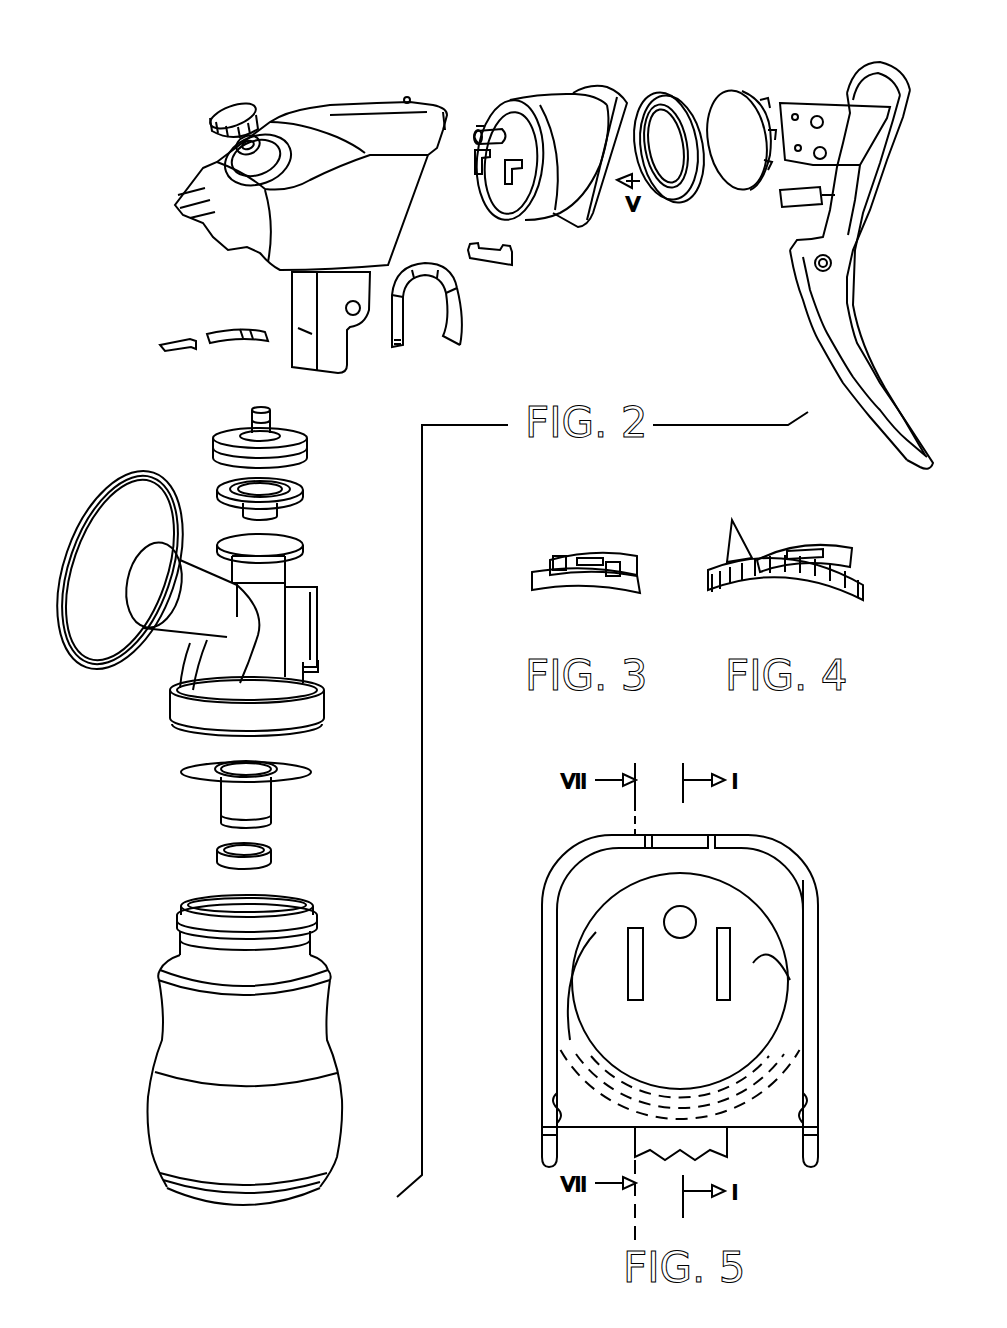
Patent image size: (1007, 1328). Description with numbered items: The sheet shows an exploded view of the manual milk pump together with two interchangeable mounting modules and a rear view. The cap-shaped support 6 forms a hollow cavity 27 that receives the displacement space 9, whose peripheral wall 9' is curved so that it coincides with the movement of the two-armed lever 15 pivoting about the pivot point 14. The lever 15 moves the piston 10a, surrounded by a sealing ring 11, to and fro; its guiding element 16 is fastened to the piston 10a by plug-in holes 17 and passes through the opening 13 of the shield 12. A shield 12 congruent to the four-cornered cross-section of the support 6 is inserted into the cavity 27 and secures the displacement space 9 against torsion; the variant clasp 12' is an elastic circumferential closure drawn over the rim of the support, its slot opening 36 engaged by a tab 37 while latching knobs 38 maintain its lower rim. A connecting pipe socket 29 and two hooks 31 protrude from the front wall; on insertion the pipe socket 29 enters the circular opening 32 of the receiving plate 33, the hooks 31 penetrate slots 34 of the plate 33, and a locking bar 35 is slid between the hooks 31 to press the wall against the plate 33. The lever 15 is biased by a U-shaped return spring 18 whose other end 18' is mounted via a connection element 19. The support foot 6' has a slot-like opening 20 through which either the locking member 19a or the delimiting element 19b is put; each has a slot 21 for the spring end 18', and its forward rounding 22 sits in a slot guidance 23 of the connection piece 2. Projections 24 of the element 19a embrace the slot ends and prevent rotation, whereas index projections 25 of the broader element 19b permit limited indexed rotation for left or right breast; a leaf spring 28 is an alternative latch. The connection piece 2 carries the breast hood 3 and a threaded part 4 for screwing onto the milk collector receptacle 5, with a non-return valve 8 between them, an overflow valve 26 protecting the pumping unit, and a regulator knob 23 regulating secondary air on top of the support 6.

In FIG. 2, the connection piece 2 is at (322, 576).
In FIG. 2, the breast hood 3 is at (137, 500).
In FIG. 2, the threaded part 4 is at (326, 711).
In FIG. 2, the milk collector receptacle 5 is at (327, 1010).
In FIG. 2, the support 6 is at (311, 150).
In FIG. 5, the support 6 is at (680, 967).
In FIG. 2, the support foot 6' is at (307, 322).
In FIG. 5, the support foot 6' is at (708, 1158).
In FIG. 2, the non-return valve 8 is at (273, 851).
In FIG. 2, the displacement space 9 is at (540, 122).
In FIG. 2, the peripheral wall 9' is at (535, 115).
In FIG. 2, the piston 10a is at (710, 110).
In FIG. 2, the sealing ring 11 is at (677, 200).
In FIG. 2, the shield 12 is at (593, 129).
In FIG. 5, the clasp 12' is at (836, 917).
In FIG. 5, the opening 13 is at (593, 930).
In FIG. 2, the pivot point 14 is at (815, 268).
In FIG. 2, the lever 15 is at (870, 220).
In FIG. 2, the guiding element 16 is at (819, 170).
In FIG. 2, the plug-in holes 17 is at (816, 116).
In FIG. 2, the return spring 18 is at (451, 305).
In FIG. 2, the other end of the spring 18' is at (425, 354).
In FIG. 2, the connection element 19 is at (227, 346).
In FIG. 3, the locking member 19a is at (607, 550).
In FIG. 4, the delimiting element 19b is at (785, 540).
In FIG. 2, the slot-like opening 20 is at (306, 335).
In FIG. 3, the slot 21 is at (590, 560).
In FIG. 4, the slot 21 is at (813, 547).
In FIG. 3, the forward rounding 22 is at (583, 585).
In FIG. 4, the forward rounding 22 is at (793, 582).
In FIG. 2, the regulator knob 23 is at (233, 105).
In FIG. 3, the projections 24 is at (558, 558).
In FIG. 4, the index projections 25 is at (732, 521).
In FIG. 2, the overflow valve 26 is at (275, 572).
In FIG. 2, the cavity 27 is at (440, 147).
In FIG. 5, the cavity 27 is at (753, 963).
In FIG. 2, the leaf spring 28 is at (176, 330).
In FIG. 2, the connecting pipe socket 29 is at (480, 124).
In FIG. 2, the hooks 31 is at (505, 173).
In FIG. 5, the circular opening 32 is at (683, 920).
In FIG. 5, the receiving plate 33 is at (760, 1010).
In FIG. 5, the slot 34 is at (633, 930).
In FIG. 2, the locking bar 35 is at (513, 263).
In FIG. 5, the slot opening 36 is at (648, 833).
In FIG. 5, the tab 37 is at (672, 848).
In FIG. 5, the latching knobs 38 is at (542, 1107).